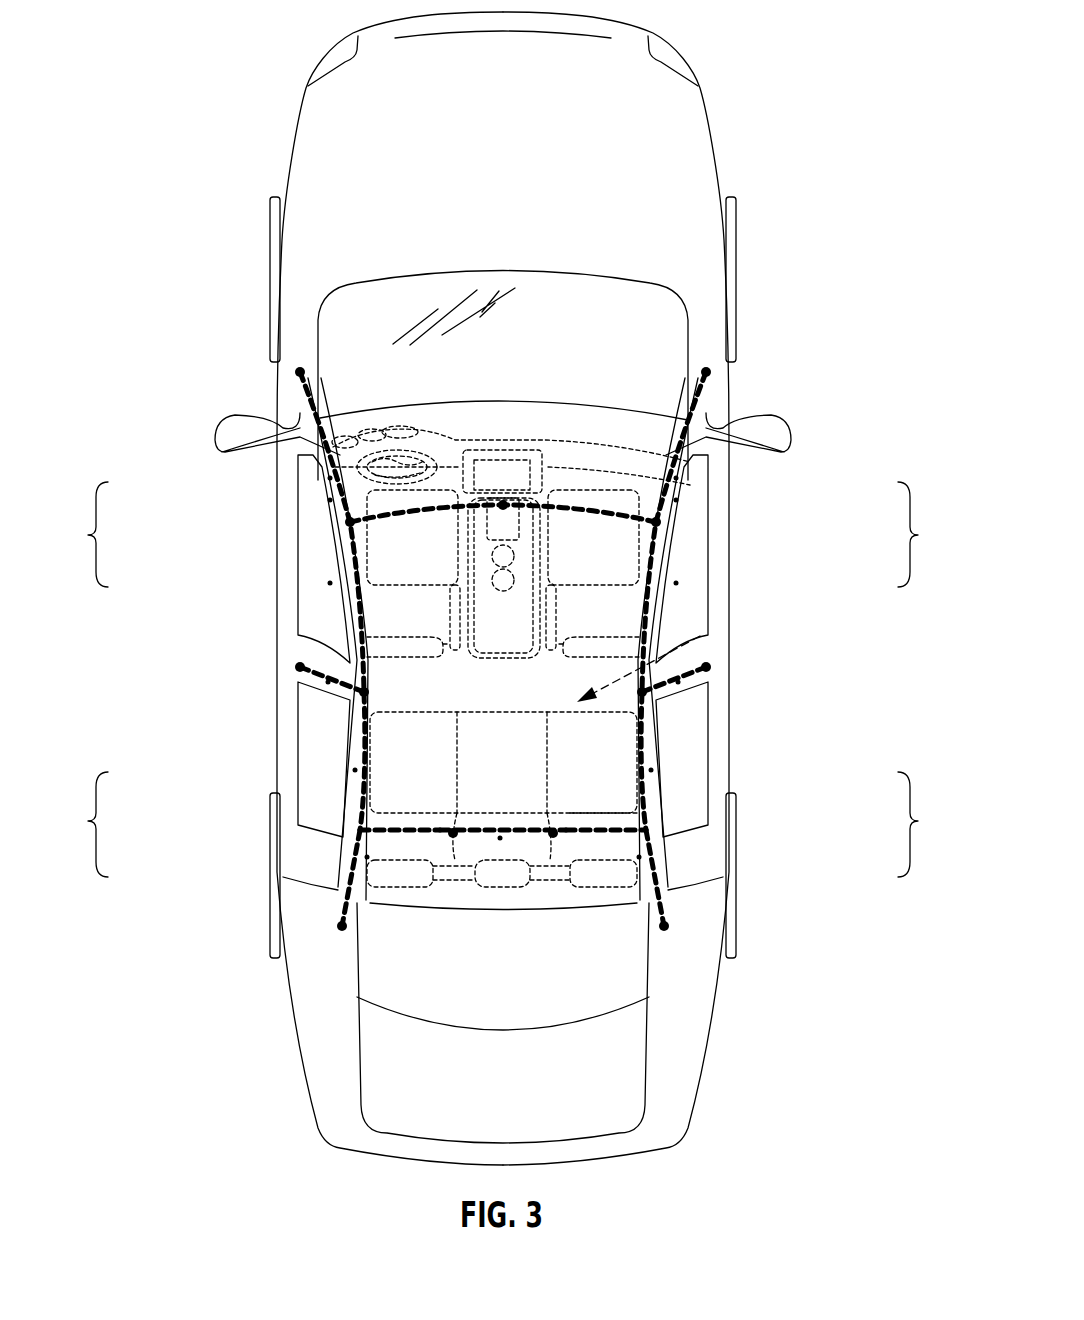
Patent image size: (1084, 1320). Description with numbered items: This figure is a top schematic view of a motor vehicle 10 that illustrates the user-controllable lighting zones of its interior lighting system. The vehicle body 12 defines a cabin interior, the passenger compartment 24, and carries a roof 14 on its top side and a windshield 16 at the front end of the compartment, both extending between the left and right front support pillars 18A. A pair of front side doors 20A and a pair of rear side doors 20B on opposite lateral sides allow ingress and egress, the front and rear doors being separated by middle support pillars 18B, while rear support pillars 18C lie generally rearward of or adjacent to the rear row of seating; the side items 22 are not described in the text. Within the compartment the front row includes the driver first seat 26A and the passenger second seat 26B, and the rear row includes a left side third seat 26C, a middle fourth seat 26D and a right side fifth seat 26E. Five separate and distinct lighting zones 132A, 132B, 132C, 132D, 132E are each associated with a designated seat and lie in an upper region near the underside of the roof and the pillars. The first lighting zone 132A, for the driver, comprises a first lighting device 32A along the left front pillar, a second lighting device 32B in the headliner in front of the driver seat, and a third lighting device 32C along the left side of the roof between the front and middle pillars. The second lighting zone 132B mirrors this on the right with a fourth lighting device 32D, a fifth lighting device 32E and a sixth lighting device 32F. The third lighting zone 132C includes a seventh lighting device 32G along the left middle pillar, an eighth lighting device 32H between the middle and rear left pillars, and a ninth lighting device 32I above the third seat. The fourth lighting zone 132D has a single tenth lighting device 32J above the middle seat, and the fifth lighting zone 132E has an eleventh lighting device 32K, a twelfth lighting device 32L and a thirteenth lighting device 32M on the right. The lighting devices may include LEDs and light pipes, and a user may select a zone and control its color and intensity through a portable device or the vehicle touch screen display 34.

The motor vehicle 10 is at (722, 62).
The vehicle body 12 is at (318, 987).
The roof 14 is at (432, 680).
The windshield 16 is at (345, 330).
The front support pillars 18A is at (298, 413).
The middle support pillars 18B is at (303, 643).
The rear support pillars 18C is at (275, 870).
The front side doors 20A is at (290, 520).
The rear side doors 20B is at (290, 752).
The door handle / side mirror 22 is at (270, 212).
The passenger compartment 24 is at (700, 636).
The driver first seat 26A is at (418, 562).
The passenger second seat 26B is at (622, 562).
The left side third seat 26C is at (418, 781).
The middle fourth seat 26D is at (518, 781).
The right side fifth seat 26E is at (622, 781).
The first lighting device 32A is at (330, 478).
The second lighting device 32B is at (330, 500).
The third lighting device 32C is at (330, 583).
The fourth lighting device 32D is at (676, 478).
The fifth lighting device 32E is at (676, 500).
The sixth lighting device 32F is at (676, 583).
The seventh lighting device 32G is at (328, 682).
The eighth lighting device 32H is at (355, 770).
The ninth lighting device 32I is at (367, 857).
The tenth lighting device 32J is at (500, 838).
The eleventh lighting device 32K is at (678, 682).
The twelfth lighting device 32L is at (651, 770).
The thirteenth lighting device 32M is at (639, 857).
The first lighting zone 132A is at (75, 534).
The second lighting zone 132B is at (931, 534).
The third lighting zone 132C is at (75, 824).
The fourth lighting zone 132D is at (521, 918).
The fifth lighting zone 132E is at (931, 824).
The vehicle touch screen display 34 is at (512, 472).